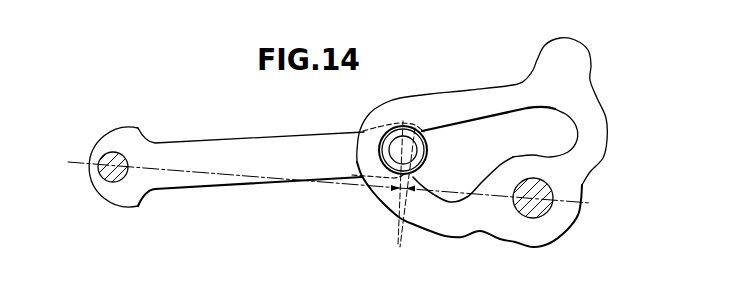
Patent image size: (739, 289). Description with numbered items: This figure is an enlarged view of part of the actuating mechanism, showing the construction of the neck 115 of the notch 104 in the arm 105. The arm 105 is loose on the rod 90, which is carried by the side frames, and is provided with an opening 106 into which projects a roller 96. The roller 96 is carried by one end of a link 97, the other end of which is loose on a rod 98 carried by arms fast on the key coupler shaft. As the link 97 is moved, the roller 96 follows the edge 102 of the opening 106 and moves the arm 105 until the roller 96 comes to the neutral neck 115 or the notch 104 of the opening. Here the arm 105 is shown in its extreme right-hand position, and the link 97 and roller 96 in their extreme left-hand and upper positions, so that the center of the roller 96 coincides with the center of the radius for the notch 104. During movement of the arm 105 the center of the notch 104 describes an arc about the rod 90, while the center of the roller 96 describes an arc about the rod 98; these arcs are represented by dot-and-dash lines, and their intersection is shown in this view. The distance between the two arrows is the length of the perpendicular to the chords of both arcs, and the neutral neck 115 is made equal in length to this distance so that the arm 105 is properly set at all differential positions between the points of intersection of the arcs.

The rod 90 is at (543, 180).
The roller 96 is at (424, 144).
The link 97 is at (262, 139).
The rod 98 is at (121, 153).
The edge 102 is at (493, 172).
The notch 104 is at (384, 144).
The arm 105 is at (470, 96).
The opening 106 is at (570, 126).
The neutral neck 115 is at (418, 128).